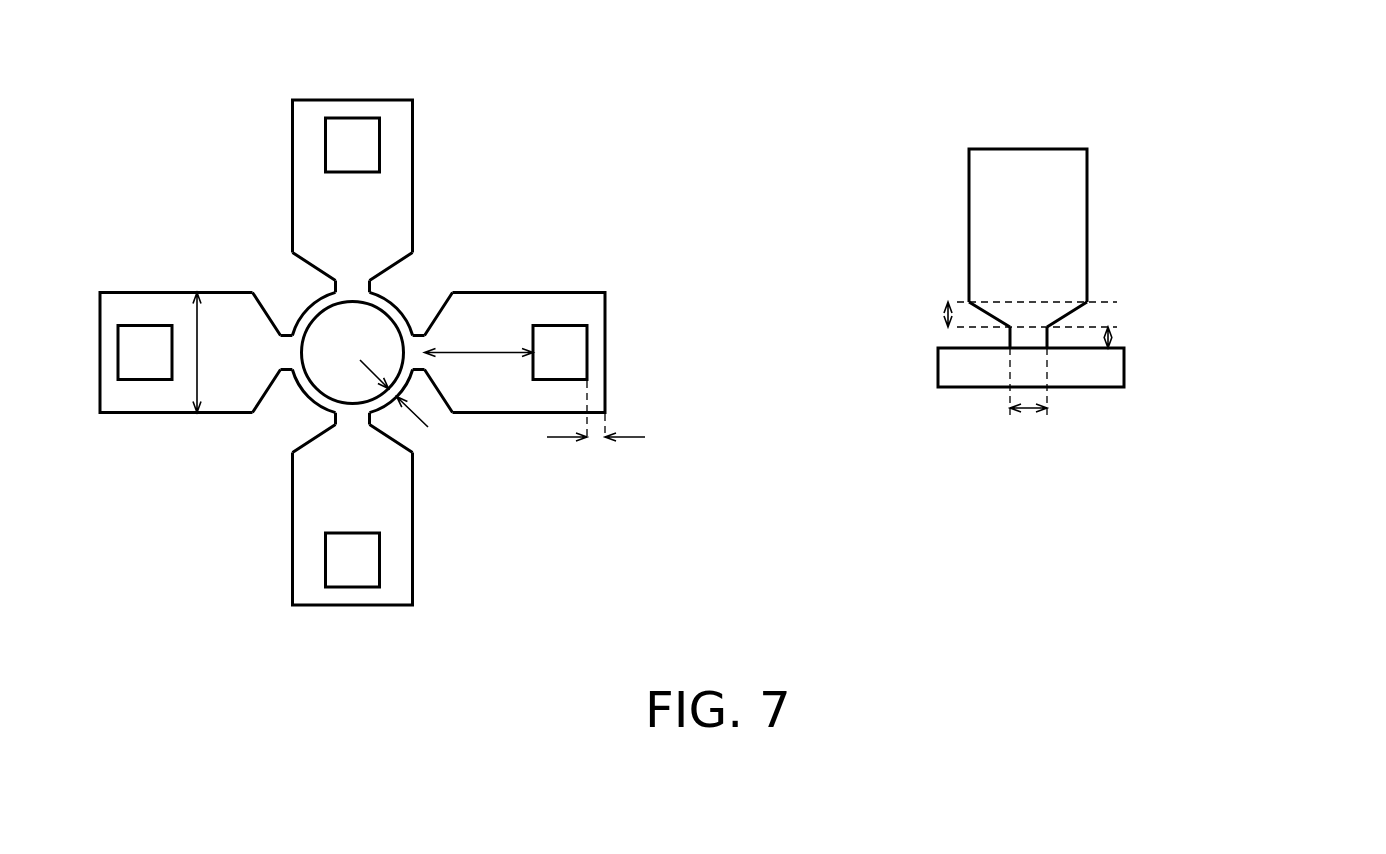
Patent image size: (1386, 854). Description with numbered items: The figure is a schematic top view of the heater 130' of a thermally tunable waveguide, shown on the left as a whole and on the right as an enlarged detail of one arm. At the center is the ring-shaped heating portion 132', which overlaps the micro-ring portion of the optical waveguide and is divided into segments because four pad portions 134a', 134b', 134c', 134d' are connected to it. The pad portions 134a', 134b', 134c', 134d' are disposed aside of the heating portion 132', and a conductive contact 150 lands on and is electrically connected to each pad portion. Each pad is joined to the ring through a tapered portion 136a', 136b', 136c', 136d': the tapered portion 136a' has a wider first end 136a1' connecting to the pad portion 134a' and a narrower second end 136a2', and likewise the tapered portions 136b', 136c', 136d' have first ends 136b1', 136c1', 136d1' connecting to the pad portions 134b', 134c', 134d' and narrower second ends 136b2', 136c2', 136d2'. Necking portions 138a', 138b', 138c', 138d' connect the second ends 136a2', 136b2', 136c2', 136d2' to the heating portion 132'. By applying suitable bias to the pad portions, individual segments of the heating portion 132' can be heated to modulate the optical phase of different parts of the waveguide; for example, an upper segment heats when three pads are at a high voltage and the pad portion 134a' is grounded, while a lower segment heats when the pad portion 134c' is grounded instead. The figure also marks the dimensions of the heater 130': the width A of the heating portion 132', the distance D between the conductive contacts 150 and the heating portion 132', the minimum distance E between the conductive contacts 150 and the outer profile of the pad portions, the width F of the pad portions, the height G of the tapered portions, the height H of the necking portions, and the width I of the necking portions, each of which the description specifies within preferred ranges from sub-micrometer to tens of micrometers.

The heater 130' is at (409, 322).
The heating portion 132' is at (322, 286).
The pad portion 134a' is at (408, 164).
The pad portion 134b' is at (565, 353).
The pad portion 134c' is at (367, 509).
The pad portion 134d' is at (196, 353).
The tapered portion 136a' is at (400, 244).
The tapered portion 136b' is at (474, 378).
The tapered portion 136c' is at (401, 467).
The tapered portion 136d' is at (243, 314).
The necking portion 138a' is at (430, 267).
The necking portion 138b' is at (528, 306).
The necking portion 138c' is at (291, 465).
The necking portion 138d' is at (249, 401).
The conductive contact 150 is at (348, 132).
The first end 136a1' is at (935, 254).
The first end 136b1' is at (935, 254).
The first end 136c1' is at (935, 254).
The first end 136d1' is at (935, 254).
The second end 136a2' is at (927, 421).
The second end 136b2' is at (927, 421).
The second end 136c2' is at (927, 421).
The second end 136d2' is at (927, 421).
The width of the heating portion A is at (403, 407).
The distance between the conductive contacts and the heating portion D is at (479, 368).
The minimum distance between the conductive contacts and the outer profile of the pa E is at (596, 433).
The width of the pad portions F is at (205, 353).
The height of the tapered portions G is at (1019, 315).
The height of the necking portions H is at (1123, 331).
The width of the necking portions I is at (1028, 427).